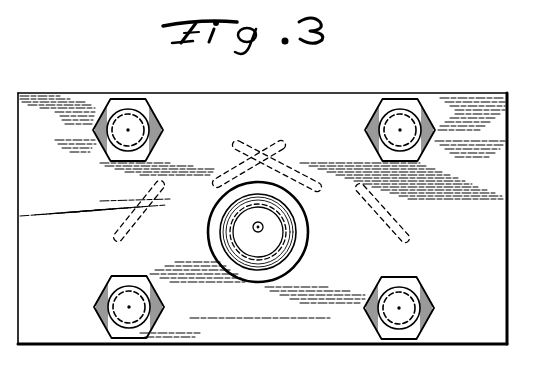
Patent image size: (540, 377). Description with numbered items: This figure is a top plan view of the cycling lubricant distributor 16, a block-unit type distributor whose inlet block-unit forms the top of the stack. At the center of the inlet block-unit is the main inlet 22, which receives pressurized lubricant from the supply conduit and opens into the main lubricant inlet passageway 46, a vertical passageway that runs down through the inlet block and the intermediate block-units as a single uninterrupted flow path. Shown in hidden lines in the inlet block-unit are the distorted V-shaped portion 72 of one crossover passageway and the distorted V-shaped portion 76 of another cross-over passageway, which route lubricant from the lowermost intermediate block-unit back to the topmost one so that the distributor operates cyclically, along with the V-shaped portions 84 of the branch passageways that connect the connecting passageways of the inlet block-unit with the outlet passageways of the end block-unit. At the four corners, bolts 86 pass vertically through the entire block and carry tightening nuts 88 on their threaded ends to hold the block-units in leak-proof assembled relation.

The cycling lubricant distributor 16 is at (508, 213).
The main inlet 22 is at (270, 233).
The main lubricant inlet passageway 46 is at (261, 231).
The distorted V-shaped portion 72 is at (222, 176).
The distorted V-shaped portion 76 is at (302, 163).
The V-shaped portion 84 is at (135, 209).
The bolt 86 is at (114, 137).
The tightening nut 88 is at (163, 129).